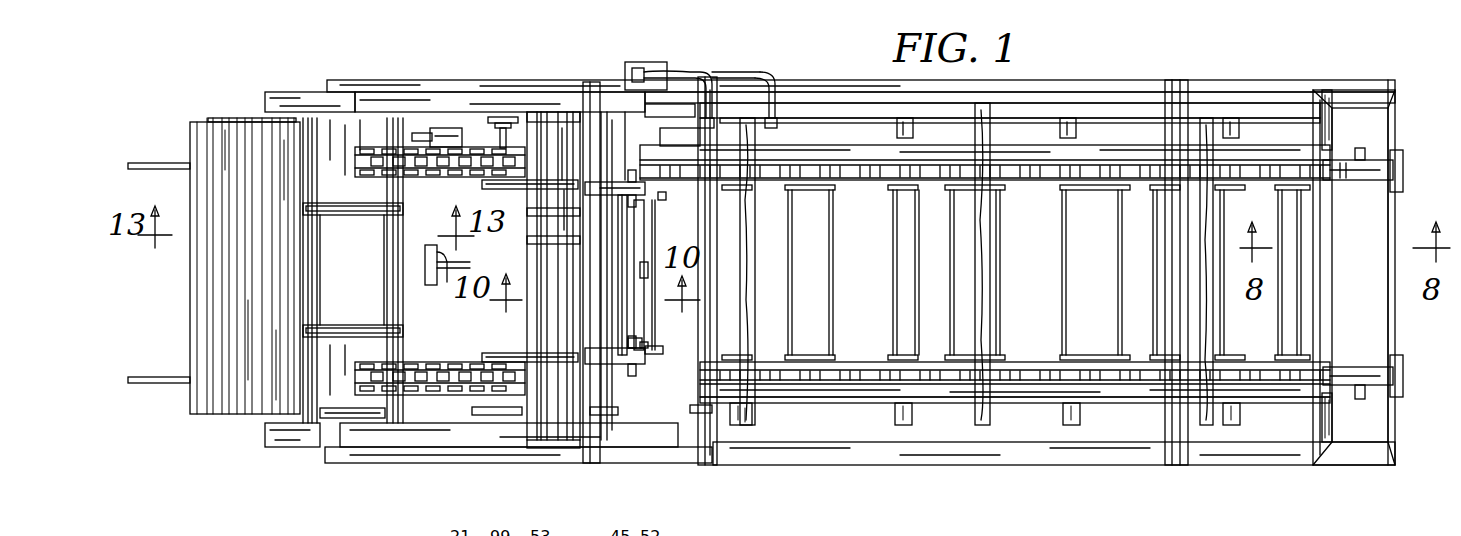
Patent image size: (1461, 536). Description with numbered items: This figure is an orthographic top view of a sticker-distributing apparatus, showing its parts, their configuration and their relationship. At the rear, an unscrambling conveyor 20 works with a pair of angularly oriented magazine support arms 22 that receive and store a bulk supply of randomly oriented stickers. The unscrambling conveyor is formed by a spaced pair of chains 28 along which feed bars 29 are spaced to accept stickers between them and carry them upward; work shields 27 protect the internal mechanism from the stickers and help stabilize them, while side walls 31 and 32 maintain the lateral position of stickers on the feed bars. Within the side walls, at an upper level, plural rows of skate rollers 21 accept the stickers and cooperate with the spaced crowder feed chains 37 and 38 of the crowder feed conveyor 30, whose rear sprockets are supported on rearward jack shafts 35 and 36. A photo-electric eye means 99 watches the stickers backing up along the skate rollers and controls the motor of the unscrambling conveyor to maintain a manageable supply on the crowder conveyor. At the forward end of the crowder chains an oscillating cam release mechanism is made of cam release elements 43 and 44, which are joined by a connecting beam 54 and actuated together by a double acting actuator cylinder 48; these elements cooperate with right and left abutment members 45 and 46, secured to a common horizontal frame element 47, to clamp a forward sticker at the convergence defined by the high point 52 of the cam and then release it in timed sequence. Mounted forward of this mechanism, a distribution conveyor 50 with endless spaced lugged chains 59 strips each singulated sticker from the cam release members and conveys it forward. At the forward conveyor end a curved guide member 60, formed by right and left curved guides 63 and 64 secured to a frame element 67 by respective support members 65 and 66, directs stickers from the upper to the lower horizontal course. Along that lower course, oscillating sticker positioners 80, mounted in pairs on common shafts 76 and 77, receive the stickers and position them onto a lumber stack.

The unscrambling conveyor 20 is at (352, 192).
The skate roller means 21 is at (470, 130).
The magazine support arms 22 is at (182, 163).
The work shields 27 is at (328, 128).
The chains 28 is at (370, 345).
The feed bars 29 is at (388, 262).
The crowder feed conveyor 30 is at (555, 175).
The side wall 31 is at (494, 440).
The side wall 32 is at (388, 105).
The rearward jack shaft 35 is at (500, 355).
The rearward jack shaft 36 is at (500, 186).
The crowder feed chain 37 is at (522, 353).
The crowder feed chain 38 is at (558, 179).
The cam release element 43 is at (655, 354).
The cam release element 44 is at (666, 194).
The abutment member 45 is at (614, 358).
The abutment member 46 is at (612, 180).
The horizontal frame element 47 is at (622, 330).
The double acting actuator cylinder 48 is at (640, 268).
The distribution conveyor 50 is at (862, 160).
The high point 52 is at (660, 346).
The connecting beam 54 is at (658, 218).
The lugged chains 59 is at (1035, 182).
The curved guide member 60 is at (1370, 150).
The curved guide 63 is at (1372, 372).
The curved guide 64 is at (1355, 176).
The support member 65 is at (1400, 380).
The support member 66 is at (1400, 186).
The frame element 67 is at (1390, 342).
The common shaft 76 is at (790, 280).
The common shaft 77 is at (834, 284).
The oscillating sticker positioners 80 is at (842, 260).
The photo-electric eye means 99 is at (422, 133).